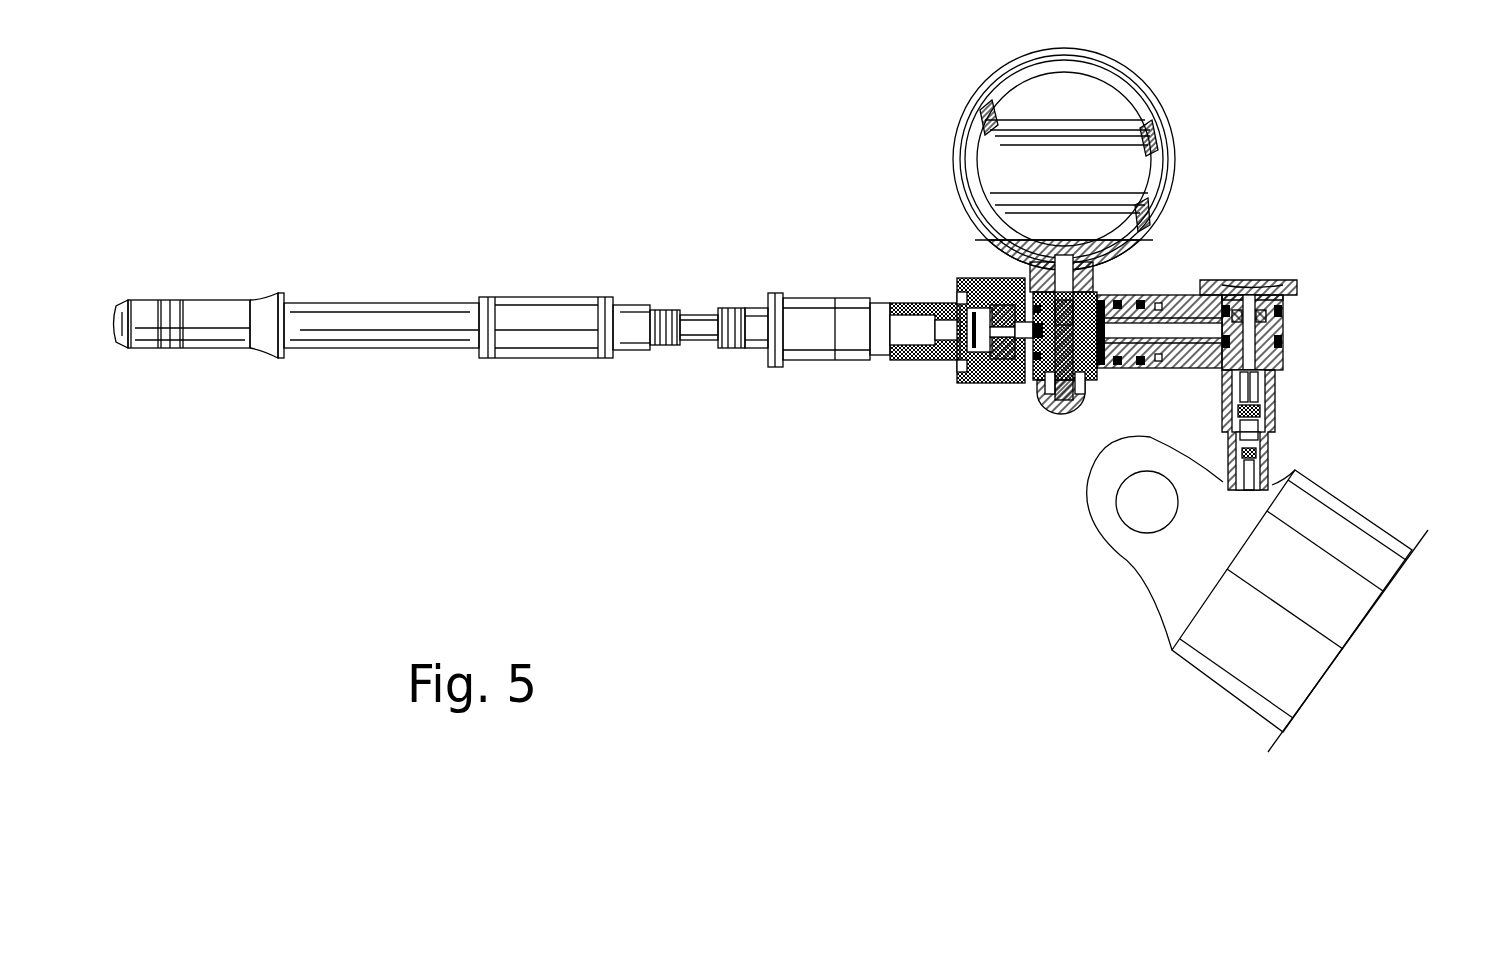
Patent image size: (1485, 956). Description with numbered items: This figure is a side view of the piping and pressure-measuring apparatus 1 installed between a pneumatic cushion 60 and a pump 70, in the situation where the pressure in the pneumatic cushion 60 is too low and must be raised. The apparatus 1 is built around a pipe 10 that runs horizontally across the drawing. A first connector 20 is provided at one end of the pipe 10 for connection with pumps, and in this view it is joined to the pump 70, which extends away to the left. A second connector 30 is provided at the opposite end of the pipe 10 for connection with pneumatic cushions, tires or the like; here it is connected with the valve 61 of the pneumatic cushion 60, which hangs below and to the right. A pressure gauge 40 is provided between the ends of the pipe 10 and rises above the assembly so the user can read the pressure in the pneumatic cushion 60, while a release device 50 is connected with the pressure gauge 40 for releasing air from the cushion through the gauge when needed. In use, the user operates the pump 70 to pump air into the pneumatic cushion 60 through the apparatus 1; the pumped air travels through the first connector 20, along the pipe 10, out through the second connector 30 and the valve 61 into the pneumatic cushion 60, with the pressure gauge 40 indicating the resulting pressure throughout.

The piping and pressure-measuring apparatus 1 is at (1228, 197).
The pipe 10 is at (1120, 380).
The first connector 20 is at (940, 382).
The second connector 30 is at (1305, 278).
The pressure gauge 40 is at (1175, 107).
The release device 50 is at (1045, 417).
The pneumatic cushion 60 is at (1307, 470).
The valve 61 is at (1265, 457).
The pump 70 is at (797, 285).